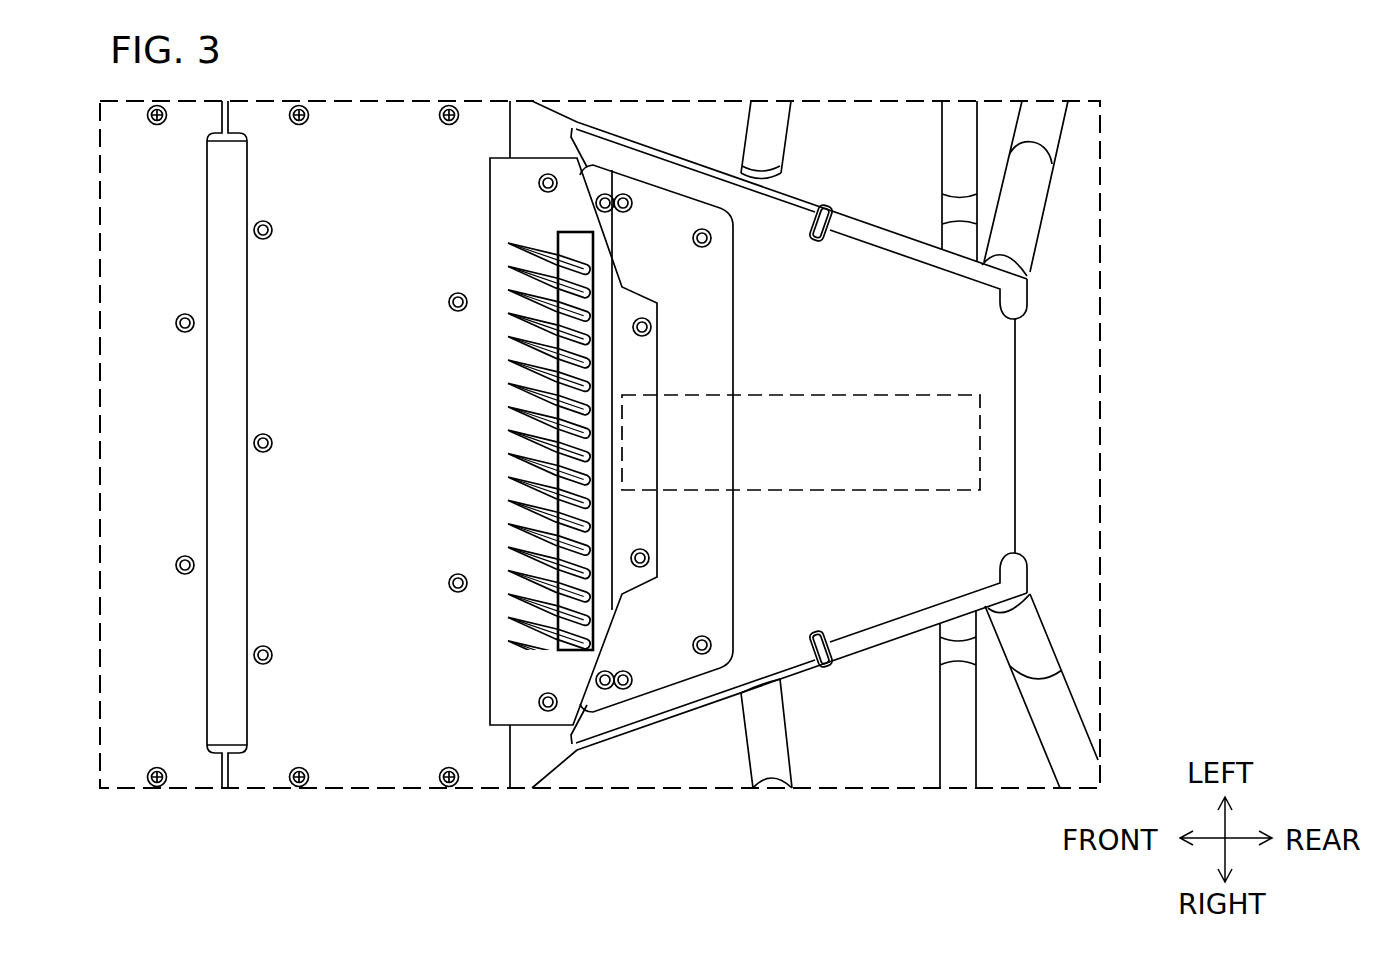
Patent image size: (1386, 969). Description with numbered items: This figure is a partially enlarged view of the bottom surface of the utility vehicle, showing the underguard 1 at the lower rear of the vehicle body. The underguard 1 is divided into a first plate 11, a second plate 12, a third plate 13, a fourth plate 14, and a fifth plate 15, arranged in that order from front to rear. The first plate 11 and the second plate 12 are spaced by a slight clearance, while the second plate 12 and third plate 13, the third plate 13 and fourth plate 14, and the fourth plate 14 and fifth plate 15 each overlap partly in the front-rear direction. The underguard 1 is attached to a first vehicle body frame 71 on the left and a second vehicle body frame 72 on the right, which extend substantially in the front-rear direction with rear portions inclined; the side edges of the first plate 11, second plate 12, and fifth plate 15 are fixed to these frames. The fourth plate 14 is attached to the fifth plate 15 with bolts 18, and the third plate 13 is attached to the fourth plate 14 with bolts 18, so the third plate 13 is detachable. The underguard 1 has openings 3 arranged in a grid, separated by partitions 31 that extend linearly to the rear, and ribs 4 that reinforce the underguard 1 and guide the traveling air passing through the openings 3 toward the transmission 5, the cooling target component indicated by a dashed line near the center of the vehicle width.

The underguard 1 is at (1030, 414).
The openings 3 is at (592, 268).
The ribs 4 is at (510, 353).
The transmission 5 is at (833, 393).
The first plate 11 is at (172, 710).
The second plate 12 is at (322, 186).
The third plate 13 is at (490, 188).
The fourth plate 14 is at (735, 582).
The fifth plate 15 is at (1017, 474).
The bolts 18 is at (660, 332).
The partitions 31 is at (593, 372).
The first vehicle body frame 71 is at (852, 213).
The second vehicle body frame 72 is at (875, 648).